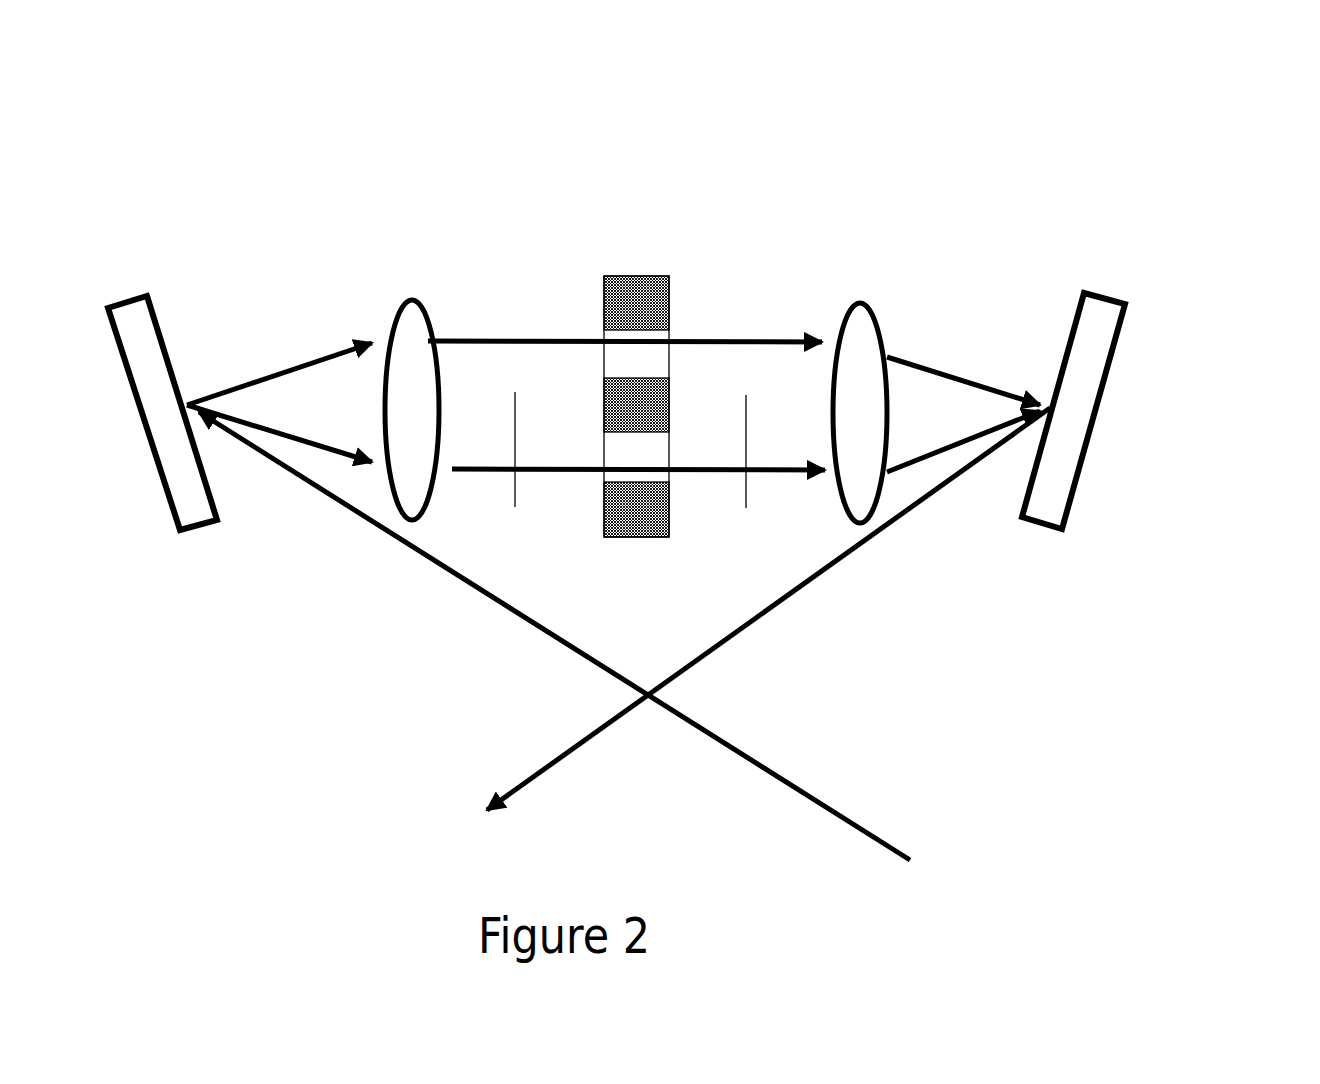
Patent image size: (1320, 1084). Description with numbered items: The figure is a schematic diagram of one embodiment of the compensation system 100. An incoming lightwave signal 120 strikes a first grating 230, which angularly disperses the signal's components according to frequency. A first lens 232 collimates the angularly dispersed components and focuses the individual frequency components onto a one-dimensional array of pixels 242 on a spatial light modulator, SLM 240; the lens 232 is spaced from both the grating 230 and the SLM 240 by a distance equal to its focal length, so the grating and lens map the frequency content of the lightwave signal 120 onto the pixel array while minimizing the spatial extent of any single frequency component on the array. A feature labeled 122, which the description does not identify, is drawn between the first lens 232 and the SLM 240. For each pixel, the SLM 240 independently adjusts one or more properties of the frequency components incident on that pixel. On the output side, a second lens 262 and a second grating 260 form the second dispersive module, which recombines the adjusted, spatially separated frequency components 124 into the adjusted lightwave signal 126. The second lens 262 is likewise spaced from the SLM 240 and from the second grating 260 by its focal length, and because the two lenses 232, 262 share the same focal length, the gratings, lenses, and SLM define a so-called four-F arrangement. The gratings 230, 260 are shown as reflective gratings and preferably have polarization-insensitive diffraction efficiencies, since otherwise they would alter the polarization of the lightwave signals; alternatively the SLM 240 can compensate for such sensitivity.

The compensation system 100 is at (700, 209).
The lightwave signal 120 is at (847, 808).
The first plane 122 is at (517, 473).
The adjusted spatially separated frequency components 124 is at (748, 475).
The adjusted lightwave signal 126 is at (578, 753).
The first grating 230 is at (158, 465).
The first lens 232 is at (404, 302).
The SLM 240 is at (630, 277).
The one-dimensional array of pixels 242 is at (652, 385).
The second grating 260 is at (1105, 295).
The second lens 262 is at (863, 305).